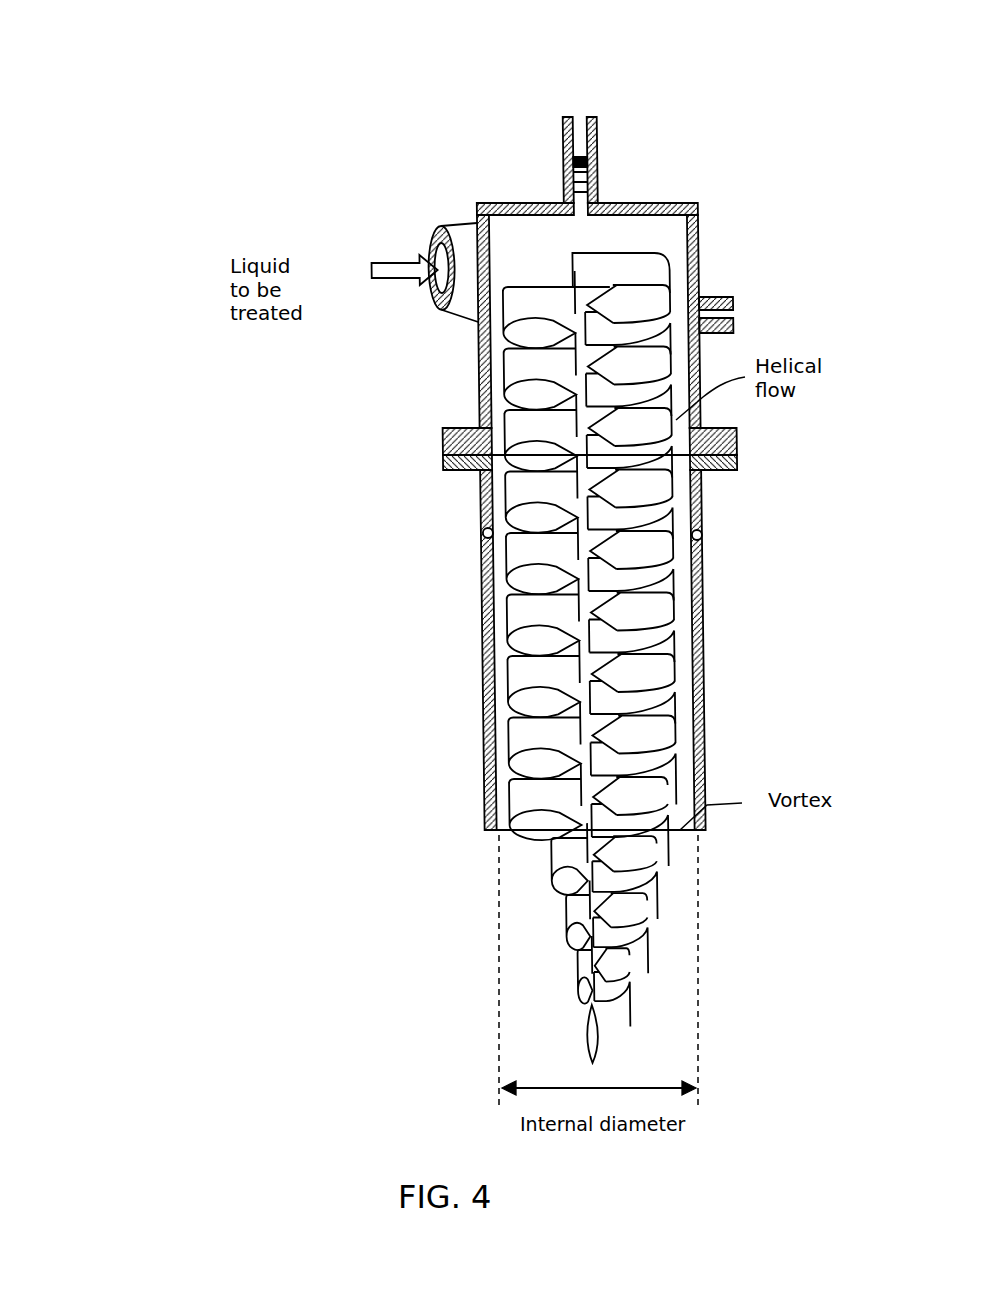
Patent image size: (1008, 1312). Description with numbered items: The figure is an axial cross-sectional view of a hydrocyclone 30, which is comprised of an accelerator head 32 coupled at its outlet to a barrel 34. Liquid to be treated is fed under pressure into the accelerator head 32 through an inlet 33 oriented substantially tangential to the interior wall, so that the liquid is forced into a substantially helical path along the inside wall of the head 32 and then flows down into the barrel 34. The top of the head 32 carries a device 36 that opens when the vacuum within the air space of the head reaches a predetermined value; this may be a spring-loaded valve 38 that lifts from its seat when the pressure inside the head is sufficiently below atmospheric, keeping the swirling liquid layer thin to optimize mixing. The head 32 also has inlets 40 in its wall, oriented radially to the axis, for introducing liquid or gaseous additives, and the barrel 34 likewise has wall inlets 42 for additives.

The hydrocyclone 30 is at (735, 204).
The accelerator head 32 is at (228, 452).
The inlet 33 is at (438, 248).
The barrel 34 is at (242, 1097).
The device 36 is at (569, 113).
The spring-loaded valve 38 is at (600, 148).
The inlets 40 is at (733, 302).
The wall inlets 42 is at (481, 533).